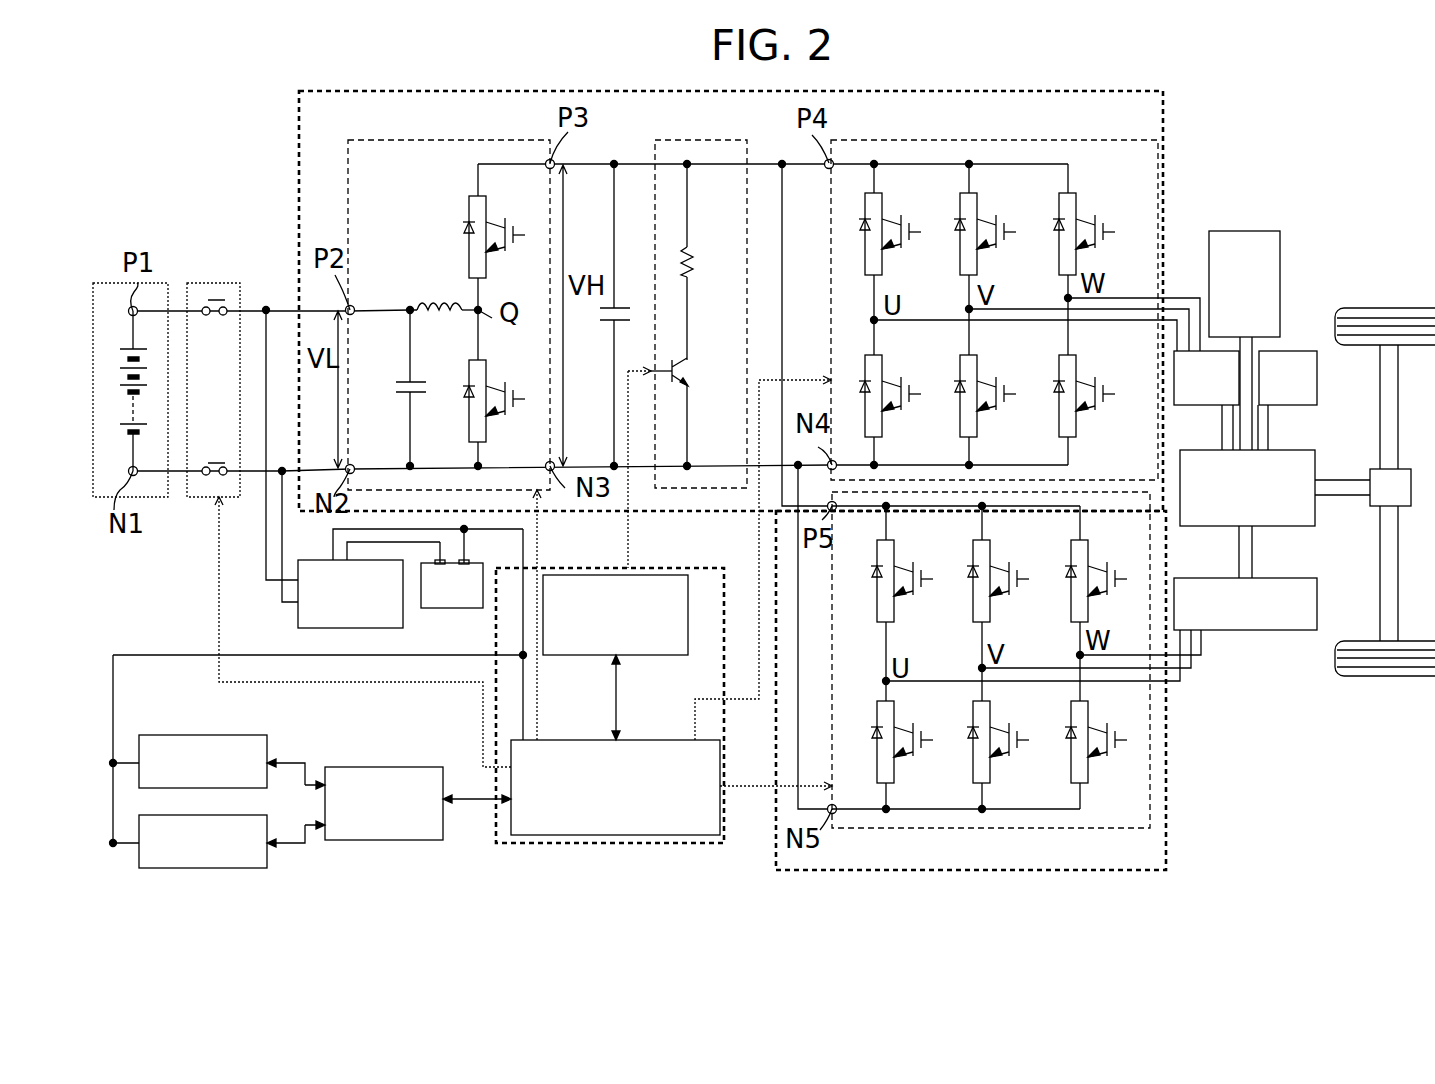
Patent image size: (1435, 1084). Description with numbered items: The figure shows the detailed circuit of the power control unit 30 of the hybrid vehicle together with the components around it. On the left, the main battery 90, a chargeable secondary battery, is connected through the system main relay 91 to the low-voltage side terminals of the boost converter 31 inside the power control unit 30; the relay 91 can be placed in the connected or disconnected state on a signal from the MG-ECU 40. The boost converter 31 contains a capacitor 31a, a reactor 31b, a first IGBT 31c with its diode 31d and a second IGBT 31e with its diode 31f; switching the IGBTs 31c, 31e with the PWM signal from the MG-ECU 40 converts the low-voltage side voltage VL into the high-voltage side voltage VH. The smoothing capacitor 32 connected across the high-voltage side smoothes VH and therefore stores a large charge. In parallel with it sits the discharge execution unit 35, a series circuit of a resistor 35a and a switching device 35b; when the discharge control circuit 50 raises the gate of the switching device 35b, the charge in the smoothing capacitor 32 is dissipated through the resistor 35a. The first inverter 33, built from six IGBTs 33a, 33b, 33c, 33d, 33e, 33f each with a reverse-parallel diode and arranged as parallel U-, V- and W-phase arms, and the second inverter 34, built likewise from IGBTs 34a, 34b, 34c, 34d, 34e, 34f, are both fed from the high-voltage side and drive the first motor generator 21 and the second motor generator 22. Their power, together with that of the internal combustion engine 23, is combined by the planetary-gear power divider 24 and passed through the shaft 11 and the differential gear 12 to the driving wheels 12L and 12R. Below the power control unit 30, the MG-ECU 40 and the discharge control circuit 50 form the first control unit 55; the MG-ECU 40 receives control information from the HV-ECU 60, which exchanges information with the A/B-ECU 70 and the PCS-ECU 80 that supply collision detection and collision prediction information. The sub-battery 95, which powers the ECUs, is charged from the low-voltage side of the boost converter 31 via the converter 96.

The drive shaft 11 is at (1343, 500).
The differential gear 12 is at (1403, 508).
The driving wheel 12L is at (1390, 308).
The driving wheel 12R is at (1385, 676).
The first motor generator 21 is at (1198, 408).
The second motor generator 22 is at (1290, 630).
The internal combustion engine 23 is at (1255, 231).
The power divider 24 is at (1213, 526).
The power control unit 30 is at (299, 135).
The boost converter 31 is at (451, 296).
The capacitor 31a is at (400, 384).
The reactor 31b is at (440, 297).
The first IGBT 31c is at (506, 256).
The diode 31d is at (462, 221).
The second IGBT 31e is at (506, 420).
The diode 31f is at (462, 384).
The smoothing capacitor 32 is at (622, 306).
The first inverter 33 is at (1015, 291).
The IGBT 33a is at (904, 253).
The IGBT 33b is at (912, 414).
The IGBT 33c is at (999, 253).
The IGBT 33d is at (999, 413).
The IGBT 33e is at (1098, 253).
The IGBT 33f is at (1098, 413).
The second inverter 34 is at (988, 681).
The IGBT 34a is at (924, 600).
The IGBT 34b is at (924, 760).
The IGBT 34c is at (1020, 600).
The IGBT 34d is at (1020, 760).
The IGBT 34e is at (1118, 600).
The IGBT 34f is at (1118, 760).
The discharge execution unit 35 is at (698, 295).
The resistor 35a is at (698, 278).
The switching device 35b is at (706, 396).
The MG-ECU 40 is at (620, 835).
The discharge control circuit 50 is at (610, 701).
The first control unit 55 is at (558, 568).
The HV-ECU 60 is at (385, 767).
The A/B-ECU 70 is at (222, 868).
The PCS-ECU 80 is at (213, 735).
The main battery 90 is at (120, 283).
The system main relay 91 is at (215, 283).
The sub-battery 95 is at (460, 608).
The converter 96 is at (403, 612).